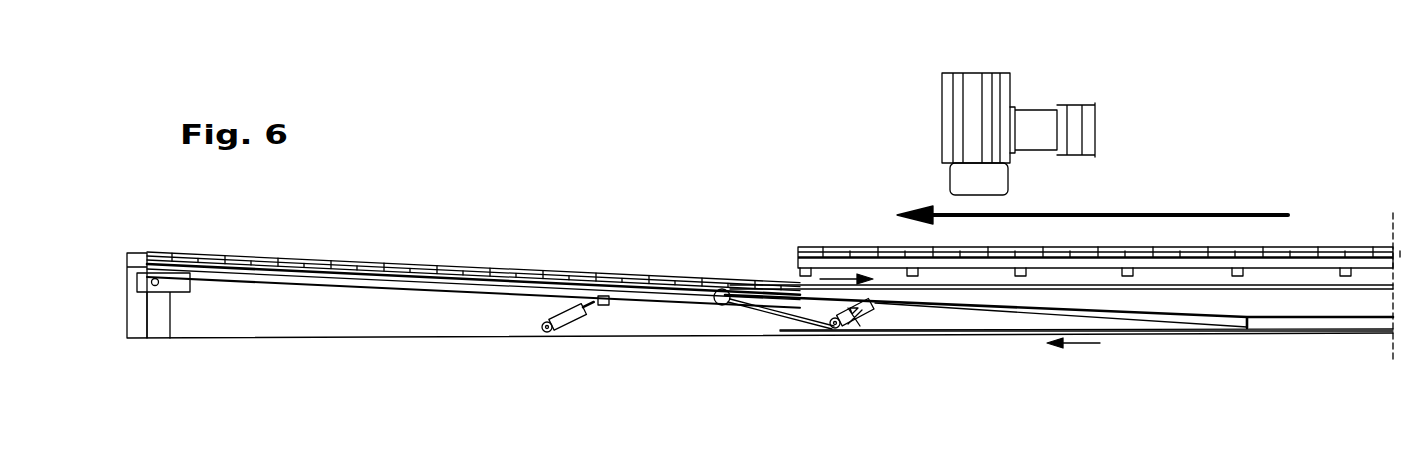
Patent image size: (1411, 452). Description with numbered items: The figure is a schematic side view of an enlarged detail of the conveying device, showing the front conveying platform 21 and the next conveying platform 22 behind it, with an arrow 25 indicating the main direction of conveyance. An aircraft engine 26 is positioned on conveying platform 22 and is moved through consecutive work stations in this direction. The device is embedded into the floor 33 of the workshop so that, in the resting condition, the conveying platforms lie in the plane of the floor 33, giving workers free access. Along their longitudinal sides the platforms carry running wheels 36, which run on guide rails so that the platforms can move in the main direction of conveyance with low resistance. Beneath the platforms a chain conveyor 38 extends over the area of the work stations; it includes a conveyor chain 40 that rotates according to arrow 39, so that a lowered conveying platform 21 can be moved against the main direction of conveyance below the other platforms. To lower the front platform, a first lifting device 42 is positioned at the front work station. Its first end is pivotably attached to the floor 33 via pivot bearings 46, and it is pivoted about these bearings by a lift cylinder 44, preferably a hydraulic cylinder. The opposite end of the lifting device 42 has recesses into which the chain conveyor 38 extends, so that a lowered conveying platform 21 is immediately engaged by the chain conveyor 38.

The conveying platform 21 is at (365, 258).
The conveying platform 22 is at (1355, 247).
The arrow 25 is at (1165, 213).
The aircraft engine 26 is at (1007, 92).
The floor 33 is at (137, 252).
The running wheels 36 is at (314, 264).
The chain conveyor 38 is at (940, 337).
The arrow 39 is at (812, 252).
The conveyor chain 40 is at (1170, 333).
The first lifting device 42 is at (413, 288).
The lift cylinder 44 is at (573, 334).
The pivot bearings 46 is at (156, 287).